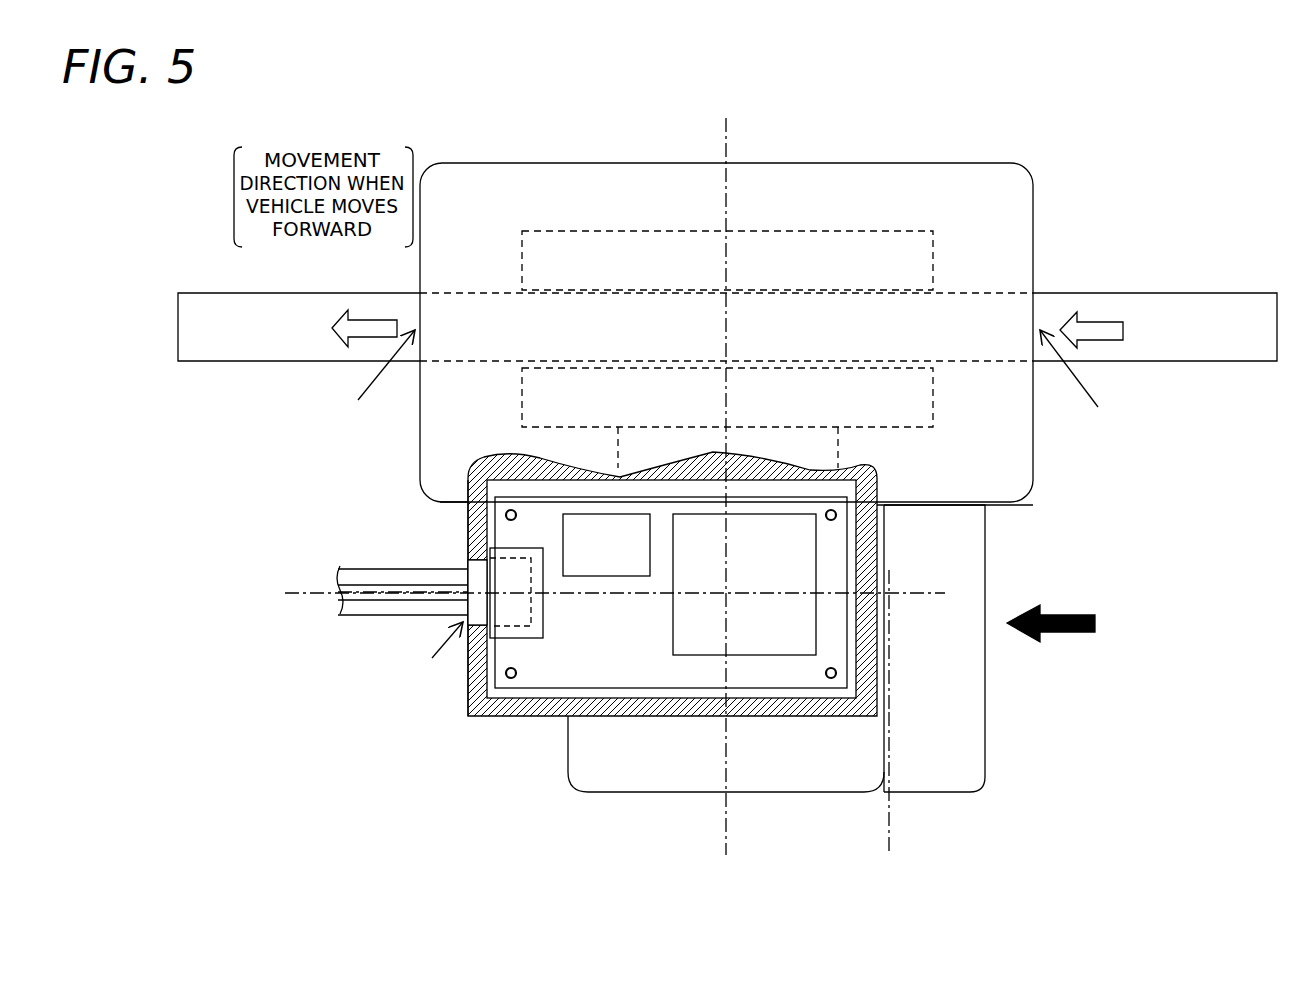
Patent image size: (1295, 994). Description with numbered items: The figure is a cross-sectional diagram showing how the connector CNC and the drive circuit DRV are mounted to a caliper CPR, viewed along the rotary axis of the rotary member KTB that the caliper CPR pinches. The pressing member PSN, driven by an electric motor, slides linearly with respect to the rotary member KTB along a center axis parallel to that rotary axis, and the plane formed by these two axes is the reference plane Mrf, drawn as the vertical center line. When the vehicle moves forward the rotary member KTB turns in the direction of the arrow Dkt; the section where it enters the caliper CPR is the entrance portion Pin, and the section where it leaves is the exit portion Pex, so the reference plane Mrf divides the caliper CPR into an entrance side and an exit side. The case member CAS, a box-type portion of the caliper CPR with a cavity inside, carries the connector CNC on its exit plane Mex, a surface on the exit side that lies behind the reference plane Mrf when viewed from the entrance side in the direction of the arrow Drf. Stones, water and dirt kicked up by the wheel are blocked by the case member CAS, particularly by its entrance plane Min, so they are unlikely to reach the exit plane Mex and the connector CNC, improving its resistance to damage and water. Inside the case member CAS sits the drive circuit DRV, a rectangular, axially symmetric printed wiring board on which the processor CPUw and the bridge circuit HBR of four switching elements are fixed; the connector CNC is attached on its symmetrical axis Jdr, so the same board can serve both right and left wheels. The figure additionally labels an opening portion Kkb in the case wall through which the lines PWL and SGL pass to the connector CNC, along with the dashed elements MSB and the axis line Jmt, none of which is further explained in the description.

The caliper CPR is at (1036, 209).
The reference plane Mrf is at (728, 121).
The rotary member KTB is at (1189, 294).
The rotation direction Dkt is at (365, 319).
The movable belt guide portions MSB is at (936, 248).
The pressing member PSN is at (840, 440).
The exit portion Pex is at (362, 405).
The entrance portion Pin is at (1103, 404).
The case member CAS is at (878, 636).
The entrance plane Min is at (878, 684).
The exit plane Mex is at (468, 540).
The opening portion Kkb is at (430, 649).
The drive circuit DRV is at (527, 684).
The processor CPUw is at (606, 545).
The bridge circuit HBR is at (744, 584).
The connector CNC is at (545, 620).
The power line PWL is at (356, 568).
The signal line SGL is at (356, 614).
The symmetrical axis Jdr is at (925, 593).
The axis line Jmt is at (890, 822).
The viewing direction Drf is at (1059, 610).